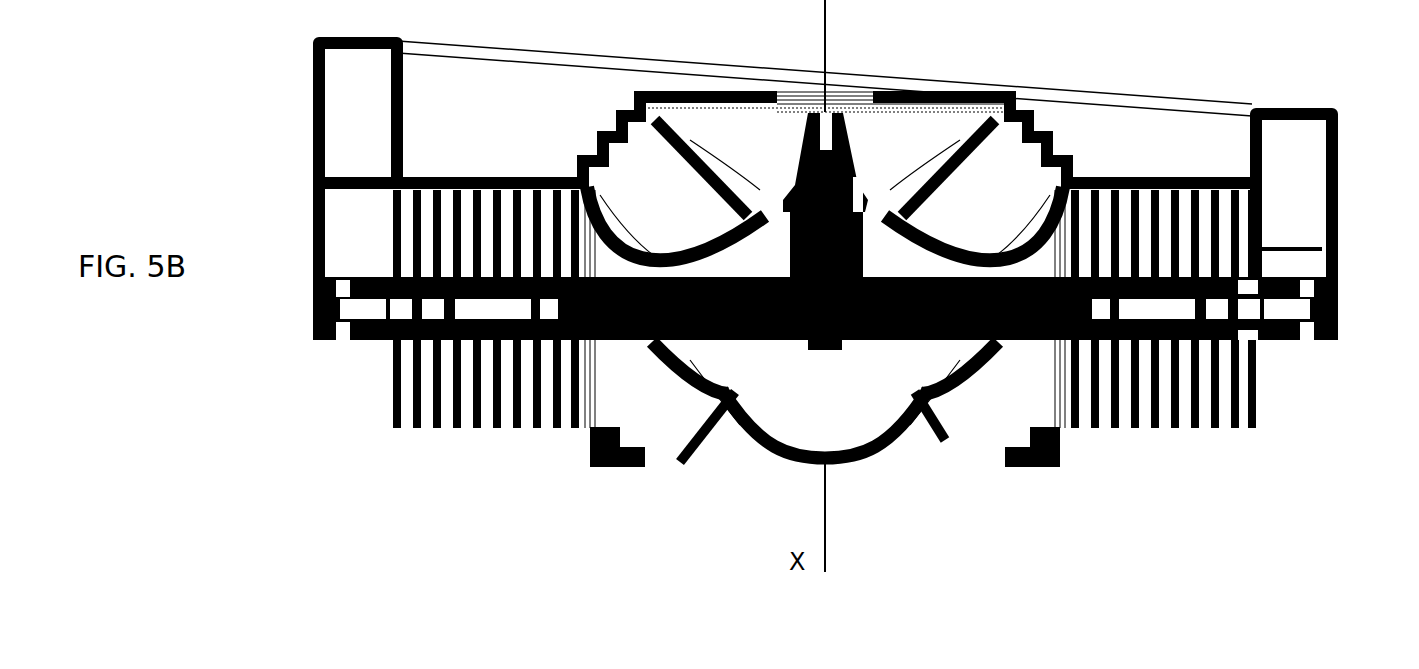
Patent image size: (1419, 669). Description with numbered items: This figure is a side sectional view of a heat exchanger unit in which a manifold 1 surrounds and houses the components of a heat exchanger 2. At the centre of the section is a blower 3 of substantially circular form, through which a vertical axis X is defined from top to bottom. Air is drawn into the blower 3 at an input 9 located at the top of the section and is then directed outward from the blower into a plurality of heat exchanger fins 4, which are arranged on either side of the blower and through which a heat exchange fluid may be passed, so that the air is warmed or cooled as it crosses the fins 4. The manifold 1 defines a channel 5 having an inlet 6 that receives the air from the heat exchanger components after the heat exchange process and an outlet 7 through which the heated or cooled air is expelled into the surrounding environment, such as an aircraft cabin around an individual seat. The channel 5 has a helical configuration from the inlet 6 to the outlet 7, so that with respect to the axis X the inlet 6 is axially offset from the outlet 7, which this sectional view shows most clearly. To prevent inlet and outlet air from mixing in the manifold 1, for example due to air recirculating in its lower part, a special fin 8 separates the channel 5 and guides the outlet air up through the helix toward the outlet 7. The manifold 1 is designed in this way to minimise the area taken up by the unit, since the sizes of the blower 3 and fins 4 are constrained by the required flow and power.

The manifold 1 is at (533, 50).
The heat exchanger 2 is at (488, 142).
The blower 3 is at (945, 148).
The heat exchanger fins 4 is at (1225, 415).
The channel 5 is at (1293, 172).
The inlet 6 is at (1285, 105).
The outlet 7 is at (313, 101).
The fin 8 is at (1287, 246).
The input 9 is at (847, 93).